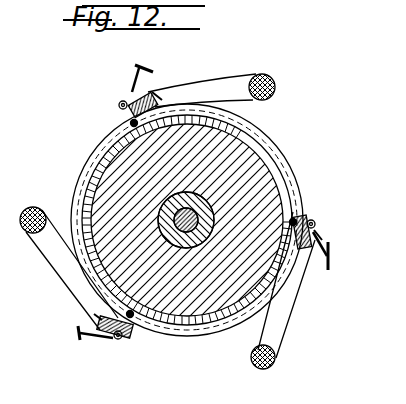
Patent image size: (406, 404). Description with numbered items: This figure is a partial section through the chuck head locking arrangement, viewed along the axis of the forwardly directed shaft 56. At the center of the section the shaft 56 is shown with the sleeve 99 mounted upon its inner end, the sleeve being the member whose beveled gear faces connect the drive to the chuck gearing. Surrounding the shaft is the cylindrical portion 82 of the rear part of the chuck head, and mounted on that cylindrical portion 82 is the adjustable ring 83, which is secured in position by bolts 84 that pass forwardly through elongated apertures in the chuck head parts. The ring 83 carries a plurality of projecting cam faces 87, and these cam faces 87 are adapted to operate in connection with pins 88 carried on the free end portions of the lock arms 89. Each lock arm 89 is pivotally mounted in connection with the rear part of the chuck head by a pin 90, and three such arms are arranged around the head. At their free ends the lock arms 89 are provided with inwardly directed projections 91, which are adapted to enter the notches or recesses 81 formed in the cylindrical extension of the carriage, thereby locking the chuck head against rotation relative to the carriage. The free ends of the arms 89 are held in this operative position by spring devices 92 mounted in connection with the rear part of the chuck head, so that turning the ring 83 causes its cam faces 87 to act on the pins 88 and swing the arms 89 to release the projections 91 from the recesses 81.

The shaft 56 is at (186, 222).
The notches or recesses 81 is at (243, 131).
The cylindrical portion 82 is at (263, 172).
The adjustable ring 83 is at (266, 152).
The bolts 84 is at (153, 108).
The projecting cam faces 87 is at (157, 97).
The pins 88 is at (123, 101).
The lock arms 89 is at (212, 76).
The pins 90 is at (263, 75).
The inwardly directed projections 91 is at (122, 117).
The spring devices 92 is at (140, 67).
The sleeve 99 is at (178, 213).